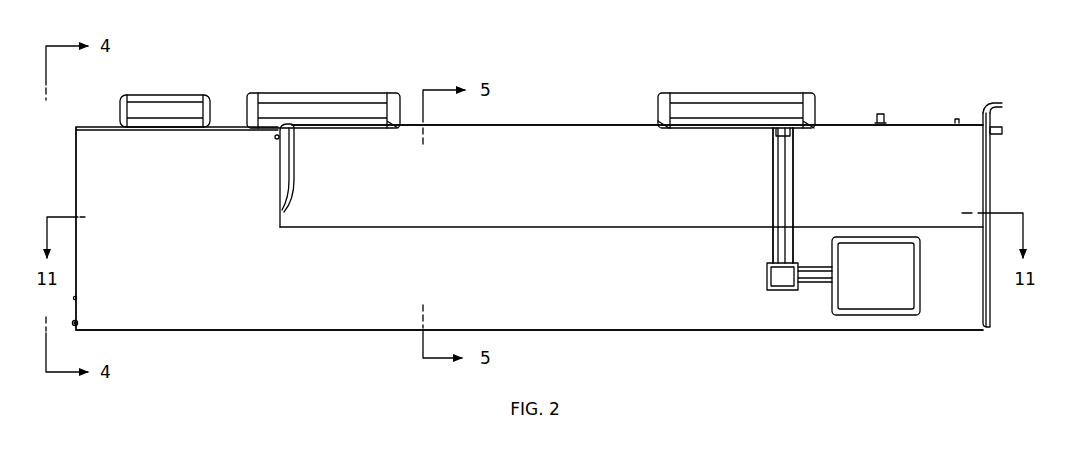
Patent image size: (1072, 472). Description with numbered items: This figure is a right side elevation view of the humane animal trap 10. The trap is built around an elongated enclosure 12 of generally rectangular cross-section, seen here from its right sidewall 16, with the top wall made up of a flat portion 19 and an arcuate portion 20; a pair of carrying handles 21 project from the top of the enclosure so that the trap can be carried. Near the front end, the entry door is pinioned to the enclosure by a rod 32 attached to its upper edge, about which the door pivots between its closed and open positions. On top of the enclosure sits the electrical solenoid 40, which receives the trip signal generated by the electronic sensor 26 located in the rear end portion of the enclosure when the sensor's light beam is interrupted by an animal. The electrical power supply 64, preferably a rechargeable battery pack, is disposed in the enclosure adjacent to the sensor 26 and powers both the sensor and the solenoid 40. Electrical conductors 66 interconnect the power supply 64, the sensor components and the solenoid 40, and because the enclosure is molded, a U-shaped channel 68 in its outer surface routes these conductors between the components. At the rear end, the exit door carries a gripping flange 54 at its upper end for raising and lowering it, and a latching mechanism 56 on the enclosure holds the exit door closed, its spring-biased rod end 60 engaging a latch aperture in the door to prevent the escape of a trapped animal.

The animal trap 10 is at (614, 67).
The enclosure 12 is at (228, 126).
The right sidewall 16 is at (219, 318).
The flat portion of top wall 19 is at (90, 126).
The arcuate portion of top wall 20 is at (537, 125).
The carrying handles 21 is at (325, 110).
The electronic sensor 26 is at (767, 275).
The rod 32 is at (275, 139).
The electrical solenoid 40 is at (172, 103).
The gripping flange 54 is at (994, 103).
The latching mechanism 56 is at (885, 117).
The end of rod 60 is at (998, 137).
The electrical power supply 64 is at (877, 303).
The electrical conductors 66 is at (788, 185).
The U-shaped channel 68 is at (788, 185).